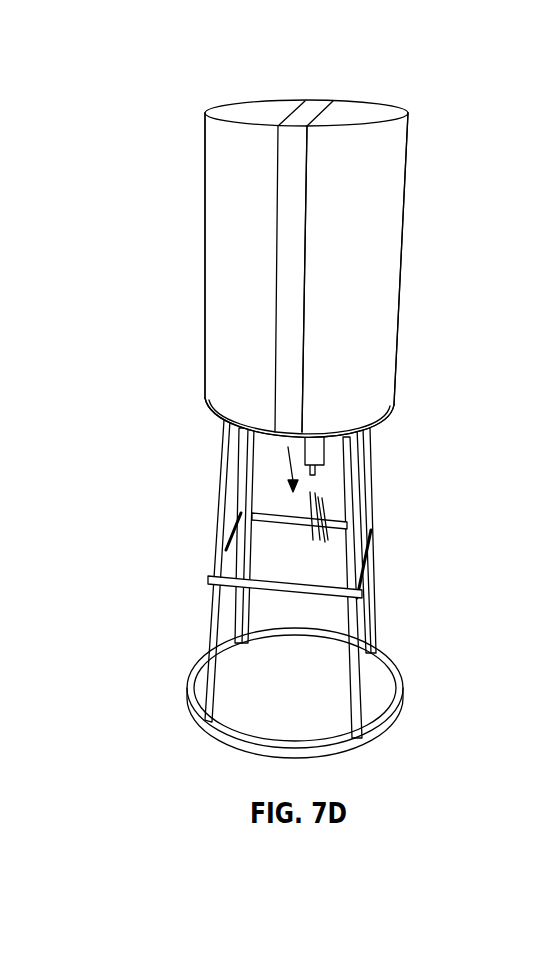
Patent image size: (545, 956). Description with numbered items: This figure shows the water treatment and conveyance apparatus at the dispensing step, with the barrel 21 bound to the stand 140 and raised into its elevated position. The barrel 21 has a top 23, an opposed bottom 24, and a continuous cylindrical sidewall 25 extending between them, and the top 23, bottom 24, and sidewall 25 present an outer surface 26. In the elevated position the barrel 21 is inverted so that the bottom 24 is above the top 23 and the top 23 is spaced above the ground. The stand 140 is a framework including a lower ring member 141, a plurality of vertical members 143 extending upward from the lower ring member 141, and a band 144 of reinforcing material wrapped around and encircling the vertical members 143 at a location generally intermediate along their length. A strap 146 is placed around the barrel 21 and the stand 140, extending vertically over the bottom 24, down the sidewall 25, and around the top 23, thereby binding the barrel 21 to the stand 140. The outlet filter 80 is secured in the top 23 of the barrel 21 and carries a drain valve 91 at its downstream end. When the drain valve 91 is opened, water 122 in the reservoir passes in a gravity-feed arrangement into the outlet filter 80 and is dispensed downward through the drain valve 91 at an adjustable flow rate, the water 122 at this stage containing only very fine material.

The barrel 21 is at (313, 261).
The top 23 is at (220, 415).
The bottom 24 is at (235, 112).
The sidewall 25 is at (398, 327).
The outer surface 26 is at (322, 267).
The strap 146 is at (280, 290).
The outlet filter 80 is at (325, 458).
The drain valve 91 is at (317, 468).
The water 122 is at (323, 503).
The stand 140 is at (302, 589).
The lower ring member 141 is at (403, 706).
The vertical members 143 is at (235, 622).
The band 144 is at (305, 592).